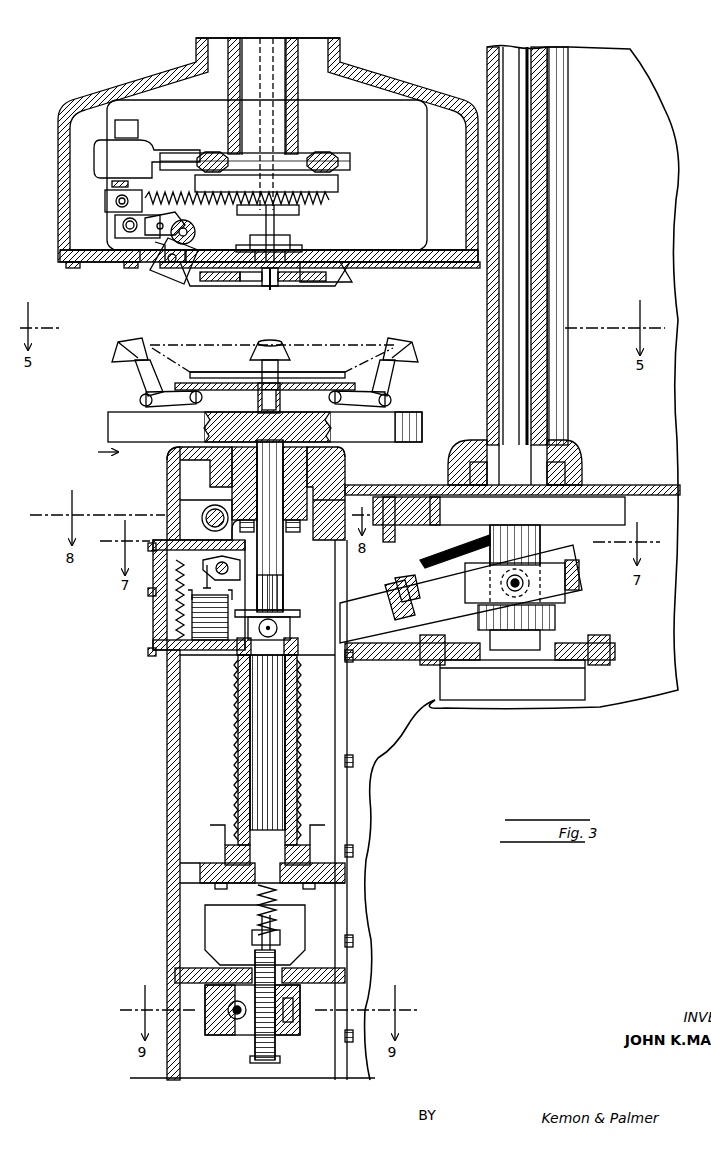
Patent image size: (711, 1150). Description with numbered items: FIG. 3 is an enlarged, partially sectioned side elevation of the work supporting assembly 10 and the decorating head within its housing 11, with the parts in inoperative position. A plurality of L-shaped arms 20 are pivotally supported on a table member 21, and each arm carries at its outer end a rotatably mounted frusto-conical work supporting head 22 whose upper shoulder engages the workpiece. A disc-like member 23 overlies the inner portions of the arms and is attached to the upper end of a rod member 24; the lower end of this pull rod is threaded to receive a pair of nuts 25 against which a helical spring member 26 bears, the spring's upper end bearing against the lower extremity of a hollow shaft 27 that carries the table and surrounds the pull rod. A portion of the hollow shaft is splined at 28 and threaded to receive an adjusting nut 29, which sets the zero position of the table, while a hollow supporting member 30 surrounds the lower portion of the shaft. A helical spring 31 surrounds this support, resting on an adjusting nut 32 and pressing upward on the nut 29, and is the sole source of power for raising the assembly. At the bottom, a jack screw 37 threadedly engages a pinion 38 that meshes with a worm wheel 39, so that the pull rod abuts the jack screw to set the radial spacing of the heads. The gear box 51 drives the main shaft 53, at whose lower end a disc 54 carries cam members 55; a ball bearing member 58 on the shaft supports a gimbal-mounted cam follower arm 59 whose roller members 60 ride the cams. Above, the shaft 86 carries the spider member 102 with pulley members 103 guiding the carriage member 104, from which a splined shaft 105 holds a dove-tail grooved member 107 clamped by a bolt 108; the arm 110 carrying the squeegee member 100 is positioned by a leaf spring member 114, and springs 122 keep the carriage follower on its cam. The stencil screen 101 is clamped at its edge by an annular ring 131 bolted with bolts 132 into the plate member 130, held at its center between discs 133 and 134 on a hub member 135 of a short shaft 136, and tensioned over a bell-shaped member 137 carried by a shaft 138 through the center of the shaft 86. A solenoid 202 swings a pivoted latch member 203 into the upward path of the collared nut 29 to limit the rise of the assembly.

The machine head assembly 10 is at (97, 451).
The cover housing 11 is at (60, 152).
The L-shaped arms 20 is at (135, 388).
The table member 21 is at (422, 422).
The work supporting head 22 is at (270, 341).
The disc-like member 23 is at (312, 390).
The rod member 24 is at (258, 403).
The nuts 25 is at (252, 938).
The helical spring member 26 is at (255, 900).
The hollow shaft 27 is at (276, 556).
The splined portion 28 is at (280, 586).
The adjusting nut 29 is at (290, 640).
The hollow supporting member 30 is at (297, 708).
The helical spring 31 is at (240, 752).
The adjusting nut 32 is at (232, 848).
The jack screw 37 is at (268, 1064).
The pinion 38 is at (280, 1036).
The worm wheel 39 is at (230, 1036).
The gear box 51 is at (505, 702).
The main shaft 53 is at (525, 273).
The disc or wheel member 54 is at (592, 496).
The cam members 55 is at (400, 565).
The ball bearing member 58 is at (560, 602).
The cam follower arm 59 is at (365, 602).
The roller members 60 is at (410, 590).
The shaft 86 is at (254, 48).
The squeegee member 100 is at (172, 270).
The stencil screen 101 is at (350, 265).
The spider member 102 is at (338, 183).
The pulley members 103 is at (205, 156).
The carriage member 104 is at (350, 160).
The splined shaft 105 is at (136, 140).
The dove-tail grooved member 107 is at (115, 231).
The bolt 108 is at (112, 203).
The arm 110 is at (161, 226).
The wire or leaf spring member 114 is at (196, 232).
The springs 122 is at (325, 198).
The plate member 130 is at (75, 268).
The annular ring 131 is at (118, 268).
The bolts 132 is at (130, 268).
The disc or washer 133 is at (245, 282).
The disc or washer 134 is at (208, 281).
The hub member 135 is at (264, 282).
The short shaft 136 is at (270, 286).
The bell-shaped member 137 is at (325, 280).
The shaft 138 is at (274, 234).
The solenoid 202 is at (178, 622).
The pivoted latch member 203 is at (232, 530).